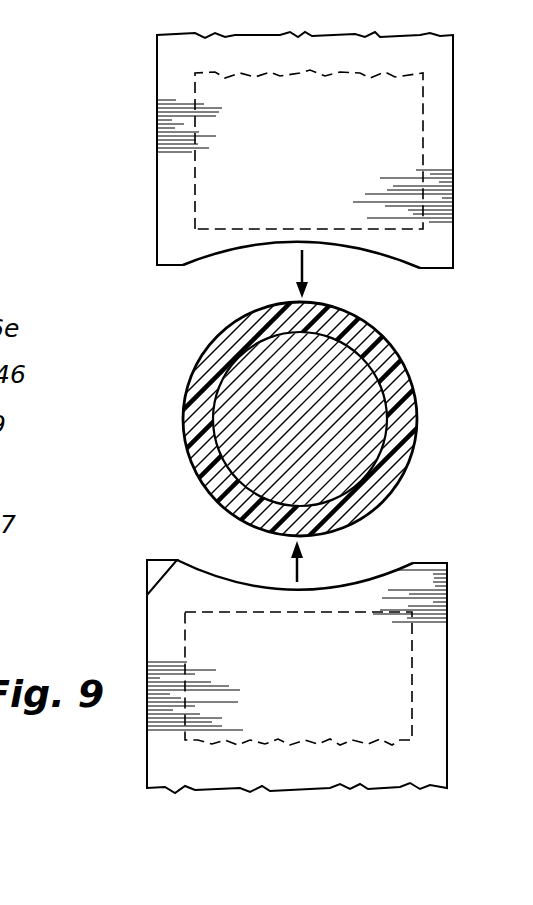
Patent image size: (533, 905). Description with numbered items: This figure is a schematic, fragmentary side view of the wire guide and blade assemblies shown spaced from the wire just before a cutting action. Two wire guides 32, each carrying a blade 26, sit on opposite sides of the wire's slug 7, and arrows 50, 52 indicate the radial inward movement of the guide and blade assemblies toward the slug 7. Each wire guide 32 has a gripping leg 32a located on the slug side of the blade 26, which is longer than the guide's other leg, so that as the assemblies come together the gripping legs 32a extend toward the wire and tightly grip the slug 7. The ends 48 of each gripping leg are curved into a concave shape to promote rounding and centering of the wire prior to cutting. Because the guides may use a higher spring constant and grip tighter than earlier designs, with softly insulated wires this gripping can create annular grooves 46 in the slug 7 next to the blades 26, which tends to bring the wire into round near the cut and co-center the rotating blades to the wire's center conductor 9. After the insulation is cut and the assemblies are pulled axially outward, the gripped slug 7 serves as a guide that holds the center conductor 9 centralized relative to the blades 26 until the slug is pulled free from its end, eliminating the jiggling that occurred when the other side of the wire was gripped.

The slug 7 is at (431, 423).
The center conductor 9 is at (250, 408).
The blade 26 is at (186, 189).
The wire guide 32 is at (148, 67).
The gripping leg 32a is at (157, 248).
The annular groove 46 is at (390, 366).
The end of gripping leg 48 is at (380, 257).
The arrow 50 is at (300, 267).
The arrow 52 is at (290, 567).